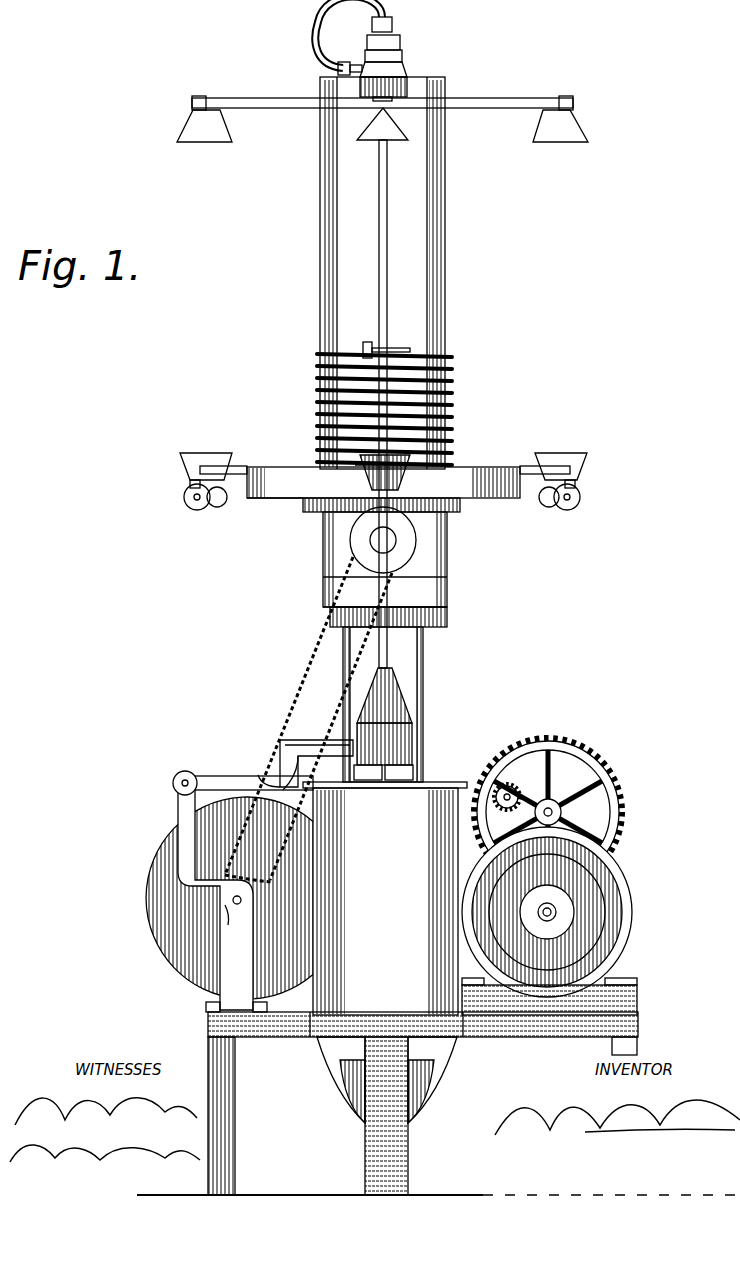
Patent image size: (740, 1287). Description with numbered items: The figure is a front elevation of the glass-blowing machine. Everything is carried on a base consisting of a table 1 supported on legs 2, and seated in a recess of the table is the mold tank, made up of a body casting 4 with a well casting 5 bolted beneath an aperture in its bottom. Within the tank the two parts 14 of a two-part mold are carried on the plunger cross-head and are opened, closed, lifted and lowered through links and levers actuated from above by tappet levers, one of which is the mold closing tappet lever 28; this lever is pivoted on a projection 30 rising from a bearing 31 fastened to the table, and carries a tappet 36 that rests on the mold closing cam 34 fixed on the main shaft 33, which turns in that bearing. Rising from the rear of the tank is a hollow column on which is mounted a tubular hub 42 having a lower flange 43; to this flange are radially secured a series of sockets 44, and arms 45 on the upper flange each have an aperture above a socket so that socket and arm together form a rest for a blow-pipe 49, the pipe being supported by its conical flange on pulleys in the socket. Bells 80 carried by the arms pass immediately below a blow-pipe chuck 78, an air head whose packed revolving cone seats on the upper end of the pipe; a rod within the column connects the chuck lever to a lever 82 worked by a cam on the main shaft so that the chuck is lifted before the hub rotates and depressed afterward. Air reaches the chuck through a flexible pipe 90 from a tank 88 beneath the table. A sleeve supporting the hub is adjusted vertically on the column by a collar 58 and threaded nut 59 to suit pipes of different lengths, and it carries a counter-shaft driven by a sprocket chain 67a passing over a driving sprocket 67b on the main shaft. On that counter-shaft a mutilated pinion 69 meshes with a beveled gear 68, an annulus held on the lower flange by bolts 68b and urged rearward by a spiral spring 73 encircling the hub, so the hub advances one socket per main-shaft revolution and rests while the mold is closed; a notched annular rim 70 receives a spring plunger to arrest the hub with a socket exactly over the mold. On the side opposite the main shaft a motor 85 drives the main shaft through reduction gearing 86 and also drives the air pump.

The table 1 is at (276, 1040).
The legs 2 is at (233, 1080).
The body casting 4 is at (385, 901).
The well casting 5 is at (340, 1090).
The mold parts 14 is at (388, 712).
The mold closing tappet lever 28 is at (306, 740).
The projection 30 is at (178, 800).
The bearing 31 is at (230, 922).
The main shaft 33 is at (232, 900).
The mold closing cam 34 is at (186, 968).
The tappet 36 is at (228, 776).
The tubular hub 42 is at (436, 196).
The lower flange 43 is at (285, 465).
The sockets 44 is at (220, 456).
The arms 45 is at (498, 92).
The blow-pipe 49 is at (380, 307).
The collar 58 is at (446, 620).
The threaded nut 59 is at (440, 586).
The sprocket chain 67a is at (302, 672).
The driving sprocket 67b is at (270, 878).
The beveled gear 68 is at (315, 512).
The bolts 68b is at (458, 468).
The mutilated pinion 69 is at (412, 541).
The annular rim 70 is at (270, 500).
The spiral spring 73 is at (448, 358).
The blow-pipe chuck 78 is at (402, 78).
The bells 80 is at (224, 122).
The lever 82 is at (279, 768).
The motor 85 is at (632, 913).
The reduction gearing 86 is at (622, 808).
The tank 88 is at (432, 1082).
The flexible pipe 90 is at (392, 11).